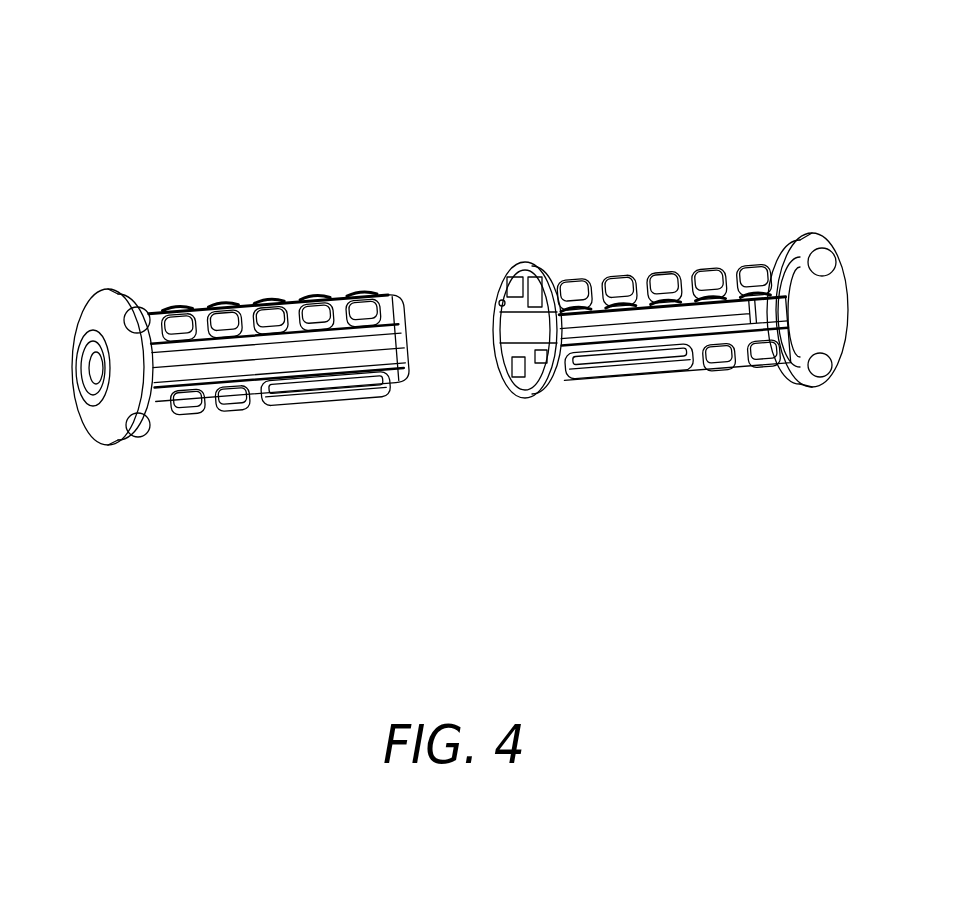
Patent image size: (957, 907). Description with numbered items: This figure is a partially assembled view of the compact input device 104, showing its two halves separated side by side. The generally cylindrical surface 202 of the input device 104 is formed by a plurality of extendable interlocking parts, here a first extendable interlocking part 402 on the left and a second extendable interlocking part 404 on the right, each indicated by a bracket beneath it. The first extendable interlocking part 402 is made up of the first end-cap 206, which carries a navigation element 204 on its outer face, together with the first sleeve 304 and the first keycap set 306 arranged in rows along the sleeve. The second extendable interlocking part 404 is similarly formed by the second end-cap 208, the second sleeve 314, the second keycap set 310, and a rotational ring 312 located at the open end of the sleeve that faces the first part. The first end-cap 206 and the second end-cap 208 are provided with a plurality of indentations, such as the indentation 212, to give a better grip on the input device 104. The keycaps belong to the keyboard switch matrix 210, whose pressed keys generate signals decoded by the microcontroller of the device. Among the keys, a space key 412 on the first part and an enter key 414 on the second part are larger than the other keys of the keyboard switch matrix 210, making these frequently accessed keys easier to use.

The compact input device 104 is at (214, 48).
The cylindrical surface 202 is at (176, 314).
The navigation element 204 is at (80, 370).
The first end-cap 206 is at (96, 425).
The second end-cap 208 is at (807, 334).
The keyboard switch matrix 210 is at (364, 300).
The indentation 212 is at (142, 430).
The first sleeve 304 is at (251, 368).
The first keycap set 306 is at (318, 306).
The second keycap set 310 is at (627, 282).
The rotational ring 312 is at (523, 398).
The second sleeve 314 is at (737, 340).
The first extendable interlocking part 402 is at (212, 413).
The second extendable interlocking part 404 is at (670, 402).
The space key 412 is at (280, 412).
The enter key 414 is at (602, 375).